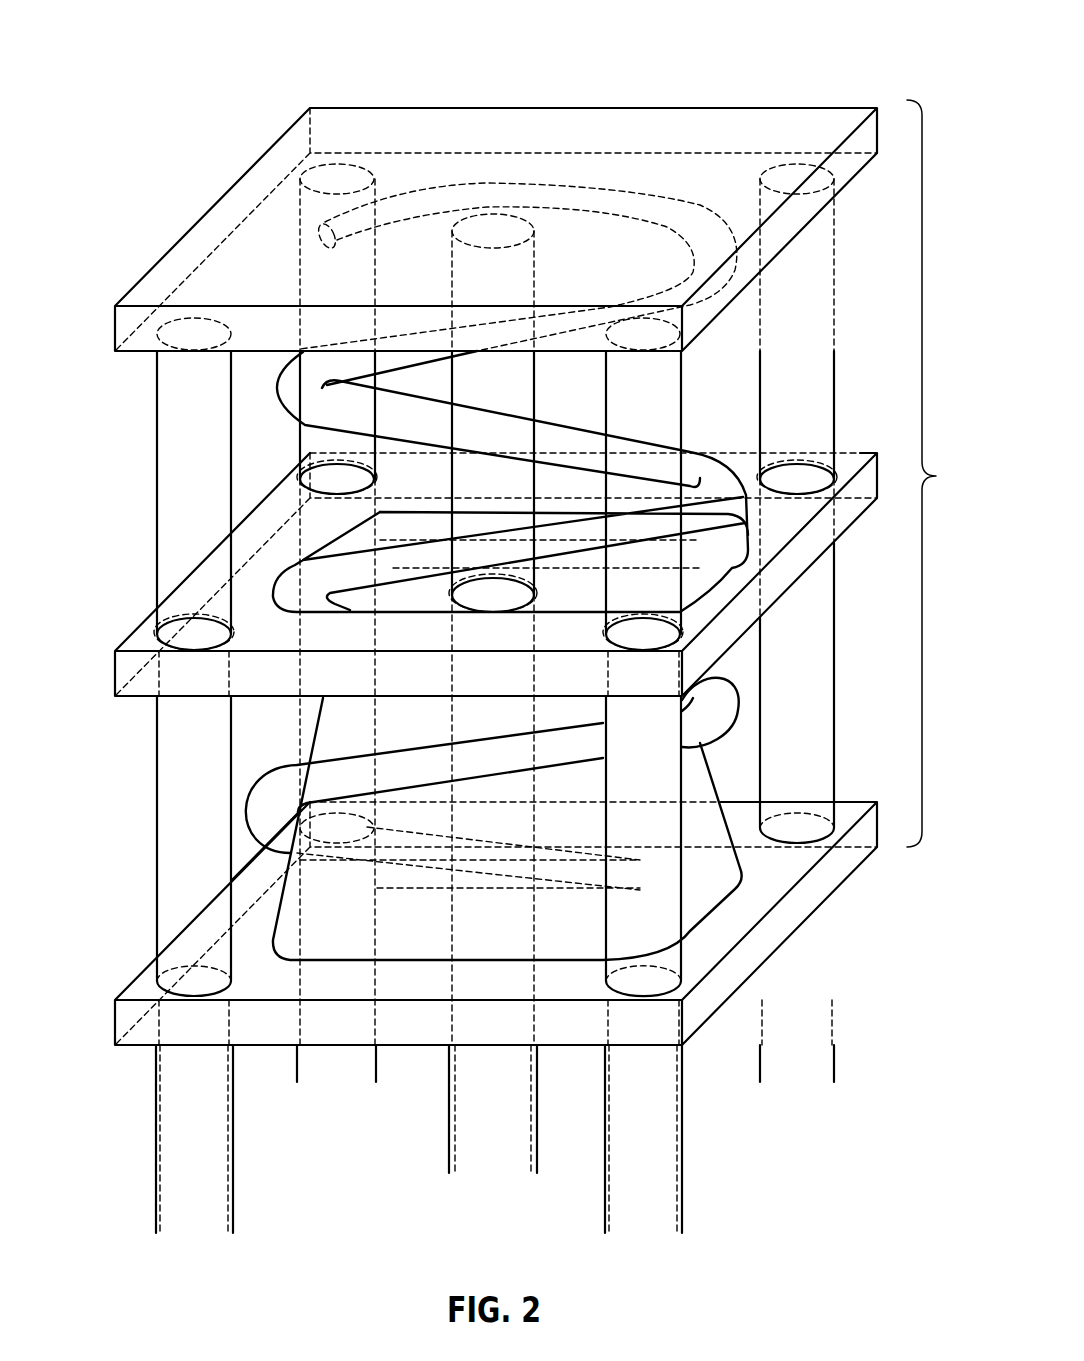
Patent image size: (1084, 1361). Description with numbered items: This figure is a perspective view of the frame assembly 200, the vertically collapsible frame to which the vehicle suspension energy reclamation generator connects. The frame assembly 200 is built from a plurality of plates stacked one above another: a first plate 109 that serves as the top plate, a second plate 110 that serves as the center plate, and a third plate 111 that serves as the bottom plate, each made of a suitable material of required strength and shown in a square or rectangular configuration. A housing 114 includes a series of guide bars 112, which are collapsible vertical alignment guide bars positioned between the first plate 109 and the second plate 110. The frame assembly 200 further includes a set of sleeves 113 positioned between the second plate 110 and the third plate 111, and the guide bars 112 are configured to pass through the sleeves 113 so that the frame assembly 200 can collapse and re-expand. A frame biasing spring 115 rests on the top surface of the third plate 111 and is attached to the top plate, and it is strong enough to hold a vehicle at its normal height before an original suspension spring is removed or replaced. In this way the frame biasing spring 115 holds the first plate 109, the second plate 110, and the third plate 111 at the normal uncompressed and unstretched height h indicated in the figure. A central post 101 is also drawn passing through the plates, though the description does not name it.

The frame assembly 200 is at (147, 36).
The center post 101 is at (477, 222).
The first plate 109 is at (273, 168).
The second plate 110 is at (145, 637).
The third plate 111 is at (145, 983).
The guide bars 112 is at (643, 330).
The sleeves 113 is at (193, 832).
The housing 114 is at (313, 735).
The frame biasing spring 115 is at (553, 190).